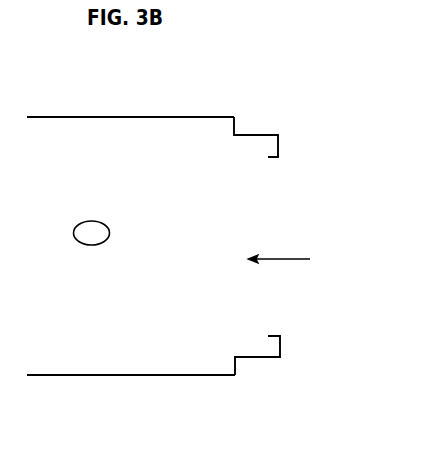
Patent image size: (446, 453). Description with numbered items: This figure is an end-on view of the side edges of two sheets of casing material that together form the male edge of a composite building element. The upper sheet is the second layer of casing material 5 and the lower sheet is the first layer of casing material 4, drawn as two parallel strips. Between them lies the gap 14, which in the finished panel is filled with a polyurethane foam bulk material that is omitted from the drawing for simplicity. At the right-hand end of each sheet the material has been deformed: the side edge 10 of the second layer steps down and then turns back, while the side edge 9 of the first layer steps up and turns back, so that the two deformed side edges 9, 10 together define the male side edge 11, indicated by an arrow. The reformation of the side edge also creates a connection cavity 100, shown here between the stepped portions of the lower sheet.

The first layer of casing material 4 is at (87, 376).
The second layer of casing material 5 is at (82, 108).
The side edge 9 is at (278, 357).
The side edge 10 is at (258, 134).
The male side edge 11 is at (287, 260).
The gap 14 is at (92, 233).
The connection cavity 100 is at (252, 348).